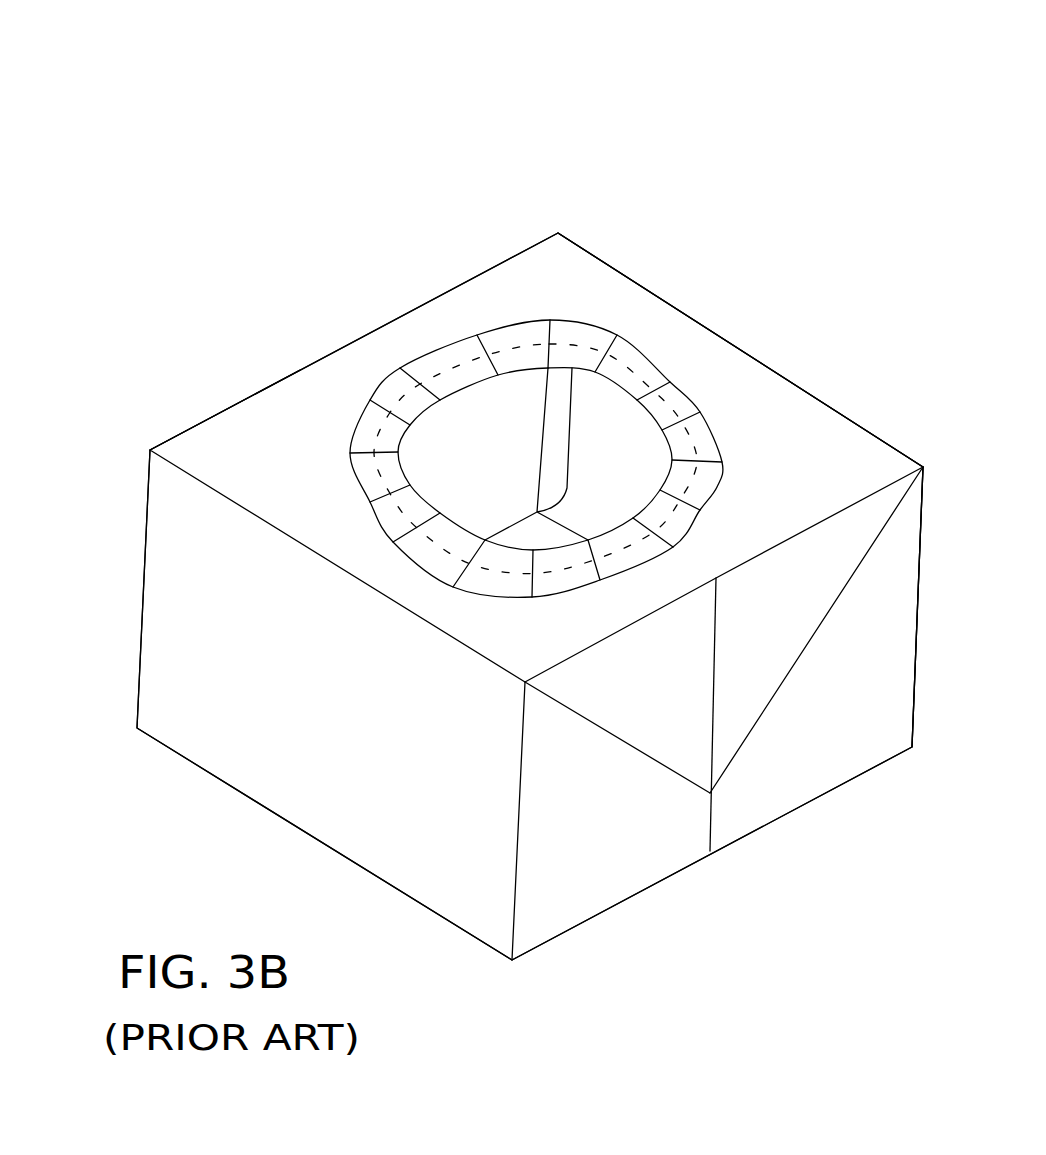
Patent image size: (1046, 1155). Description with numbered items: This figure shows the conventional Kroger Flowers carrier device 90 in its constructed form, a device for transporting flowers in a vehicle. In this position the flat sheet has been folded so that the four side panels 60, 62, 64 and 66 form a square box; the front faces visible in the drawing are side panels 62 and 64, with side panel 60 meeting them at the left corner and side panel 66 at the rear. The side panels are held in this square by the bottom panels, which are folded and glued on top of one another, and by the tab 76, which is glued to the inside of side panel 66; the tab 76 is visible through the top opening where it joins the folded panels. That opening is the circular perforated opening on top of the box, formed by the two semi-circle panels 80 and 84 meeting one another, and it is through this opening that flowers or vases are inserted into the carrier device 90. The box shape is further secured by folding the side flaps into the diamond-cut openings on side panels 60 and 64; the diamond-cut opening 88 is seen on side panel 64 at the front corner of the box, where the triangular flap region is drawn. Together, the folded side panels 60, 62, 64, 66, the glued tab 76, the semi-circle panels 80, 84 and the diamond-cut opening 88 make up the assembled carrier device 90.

The carrier device 90 is at (498, 200).
The semi-circle panel 80 is at (313, 380).
The side panel 60 is at (203, 417).
The side panel 62 is at (168, 575).
The side panel 64 is at (572, 898).
The side panel 66 is at (793, 377).
The semi-circle panel 84 is at (807, 425).
The diamond-cut opening 88 is at (698, 797).
The tab 76 is at (557, 447).